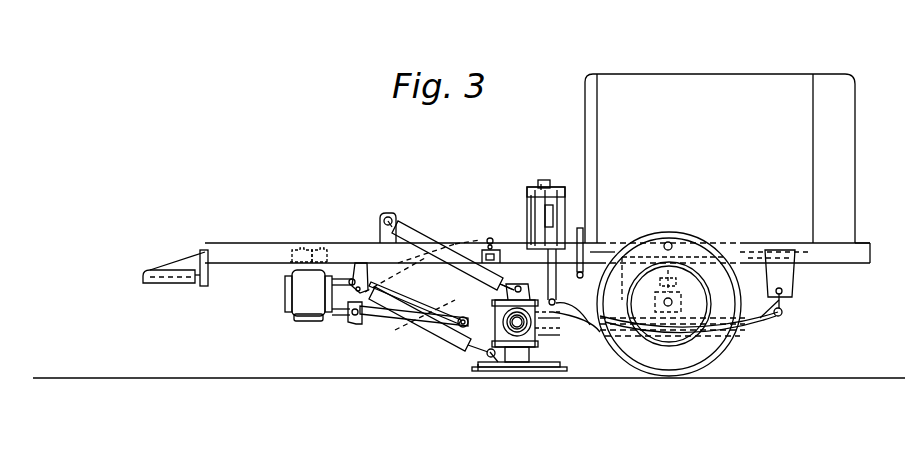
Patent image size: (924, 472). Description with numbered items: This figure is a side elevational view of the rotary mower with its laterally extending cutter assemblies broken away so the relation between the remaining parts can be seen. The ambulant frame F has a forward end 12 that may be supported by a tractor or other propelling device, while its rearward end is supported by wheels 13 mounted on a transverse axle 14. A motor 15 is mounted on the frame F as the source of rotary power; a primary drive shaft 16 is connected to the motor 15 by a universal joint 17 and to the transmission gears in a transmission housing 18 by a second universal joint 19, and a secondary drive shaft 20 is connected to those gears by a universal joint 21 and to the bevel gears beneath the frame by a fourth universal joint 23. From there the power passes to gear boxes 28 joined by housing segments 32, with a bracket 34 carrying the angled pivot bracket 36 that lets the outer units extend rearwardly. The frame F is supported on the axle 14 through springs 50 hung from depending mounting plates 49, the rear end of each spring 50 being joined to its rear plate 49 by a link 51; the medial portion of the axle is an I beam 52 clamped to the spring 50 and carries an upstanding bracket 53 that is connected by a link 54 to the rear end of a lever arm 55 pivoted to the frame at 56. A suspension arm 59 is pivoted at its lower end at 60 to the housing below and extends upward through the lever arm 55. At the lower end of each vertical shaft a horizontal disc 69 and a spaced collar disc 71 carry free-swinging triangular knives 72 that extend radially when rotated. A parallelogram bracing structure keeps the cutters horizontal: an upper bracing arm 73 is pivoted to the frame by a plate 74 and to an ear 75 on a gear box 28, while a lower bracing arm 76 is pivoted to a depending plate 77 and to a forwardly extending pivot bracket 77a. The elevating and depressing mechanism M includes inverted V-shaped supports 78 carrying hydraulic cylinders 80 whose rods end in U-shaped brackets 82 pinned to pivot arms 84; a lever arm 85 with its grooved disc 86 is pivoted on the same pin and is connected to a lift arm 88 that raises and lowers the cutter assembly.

The forward end 12 is at (228, 248).
The wheels 13 is at (710, 340).
The axle 14 is at (676, 301).
The motor 15 is at (735, 88).
The primary drive shaft 16 is at (408, 266).
The universal joint 17 is at (488, 238).
The transmission housing 18 is at (292, 296).
The second universal joint 19 is at (351, 278).
The secondary drive shaft 20 is at (392, 318).
The universal joint 21 is at (351, 318).
The fourth universal joint 23 is at (459, 320).
The gear box 28 is at (545, 332).
The housing segments 32 is at (526, 334).
The bracket 34 is at (560, 322).
The angled pivot bracket 36 is at (498, 312).
The mounting plates 49 is at (552, 312).
The spring 50 is at (750, 322).
The link 51 is at (782, 306).
The I beam 52 is at (660, 300).
The upstanding bracket 53 is at (675, 293).
The link 54 is at (664, 290).
The lever arm 55 is at (603, 252).
The pivot 56 is at (484, 252).
The suspension arm 59 is at (582, 268).
The pivot 60 is at (567, 322).
The horizontal disc 69 is at (542, 371).
The collar disc 71 is at (530, 368).
The cutter element 72 is at (476, 366).
The upper bracing arm 73 is at (438, 245).
The plate 74 is at (383, 232).
The ear 75 is at (497, 285).
The lower bracing arm 76 is at (398, 298).
The plate 77 is at (364, 272).
The pivot bracket 77a is at (496, 363).
The inverted V-shaped supports 78 is at (565, 186).
The hydraulic cylinders 80 is at (533, 182).
The U-shaped bracket 82 is at (537, 203).
The pivot arms 84 is at (533, 223).
The lever arm 85 is at (551, 187).
The disc 86 is at (545, 216).
The lift arm 88 is at (556, 224).
The elevating and depressing mechanism M is at (520, 186).
The ambulant frame F is at (870, 250).